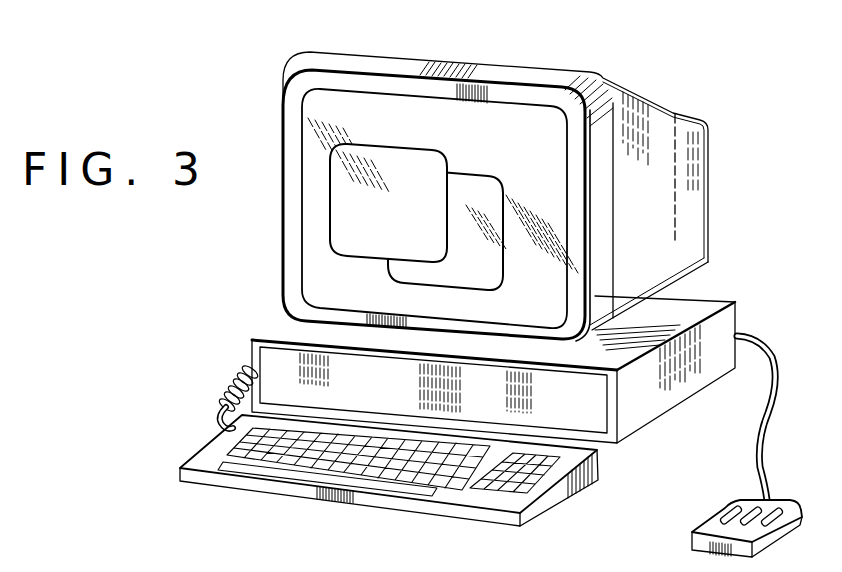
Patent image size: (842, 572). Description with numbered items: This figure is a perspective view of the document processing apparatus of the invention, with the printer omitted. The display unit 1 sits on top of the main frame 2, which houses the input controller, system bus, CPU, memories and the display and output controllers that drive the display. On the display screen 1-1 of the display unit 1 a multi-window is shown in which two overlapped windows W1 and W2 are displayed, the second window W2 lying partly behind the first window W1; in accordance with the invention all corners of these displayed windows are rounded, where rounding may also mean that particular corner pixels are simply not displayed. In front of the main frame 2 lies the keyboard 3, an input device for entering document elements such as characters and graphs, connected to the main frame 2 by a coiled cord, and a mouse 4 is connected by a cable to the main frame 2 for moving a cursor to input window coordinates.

The display unit 1 is at (521, 66).
The display screen 1-1 is at (372, 95).
The first window W1 is at (428, 146).
The second window W2 is at (477, 178).
The main frame 2 is at (723, 320).
The keyboard 3 is at (563, 490).
The mouse 4 is at (780, 503).